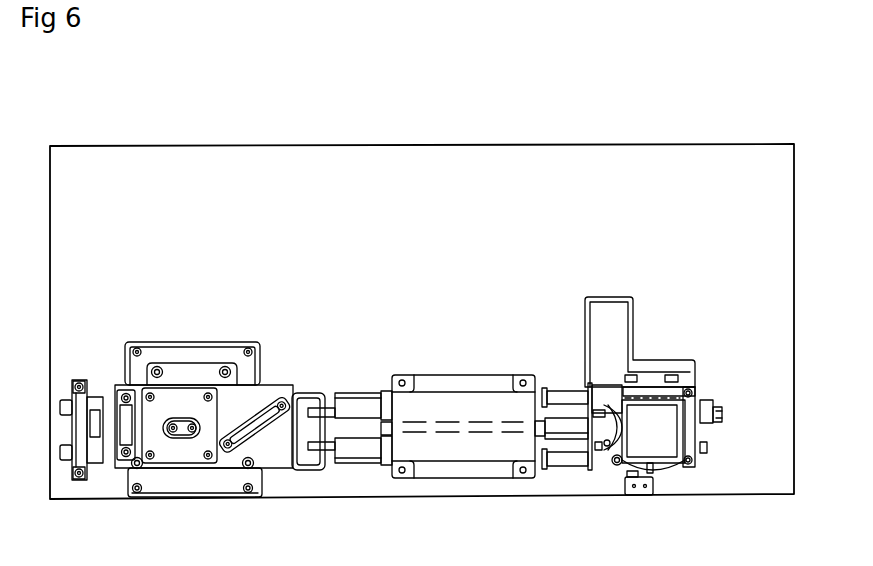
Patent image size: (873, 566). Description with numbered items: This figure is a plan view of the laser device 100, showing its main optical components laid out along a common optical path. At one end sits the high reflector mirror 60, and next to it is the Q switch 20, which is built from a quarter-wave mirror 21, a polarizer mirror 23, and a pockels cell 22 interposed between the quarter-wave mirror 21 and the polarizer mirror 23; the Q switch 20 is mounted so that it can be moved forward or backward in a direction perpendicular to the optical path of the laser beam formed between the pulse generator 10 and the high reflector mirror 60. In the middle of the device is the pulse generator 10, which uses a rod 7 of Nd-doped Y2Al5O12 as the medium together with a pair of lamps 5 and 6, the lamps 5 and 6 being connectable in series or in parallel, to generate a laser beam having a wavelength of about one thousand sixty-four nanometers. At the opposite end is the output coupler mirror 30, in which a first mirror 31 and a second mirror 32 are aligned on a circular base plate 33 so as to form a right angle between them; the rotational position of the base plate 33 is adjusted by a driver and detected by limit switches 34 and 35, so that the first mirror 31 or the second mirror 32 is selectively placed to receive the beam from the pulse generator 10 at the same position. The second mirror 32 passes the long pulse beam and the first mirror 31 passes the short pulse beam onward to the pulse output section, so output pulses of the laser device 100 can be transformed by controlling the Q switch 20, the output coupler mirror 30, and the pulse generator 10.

The laser device 100 is at (415, 218).
The high reflector mirror 60 is at (85, 380).
The Q switch 20 is at (187, 372).
The quarter-wave mirror 21 is at (130, 392).
The pockels cell 22 is at (183, 447).
The polarizer mirror 23 is at (260, 430).
The pulse generator 10 is at (450, 400).
The rod 7 is at (467, 427).
The output coupler mirror 30 is at (718, 343).
The lamp 6 is at (620, 406).
The second mirror 32 is at (655, 387).
The first mirror 31 is at (695, 450).
The limit switch 35 is at (724, 405).
The base plate 33 is at (618, 437).
The lamp 5 is at (602, 447).
The limit switch 34 is at (645, 496).